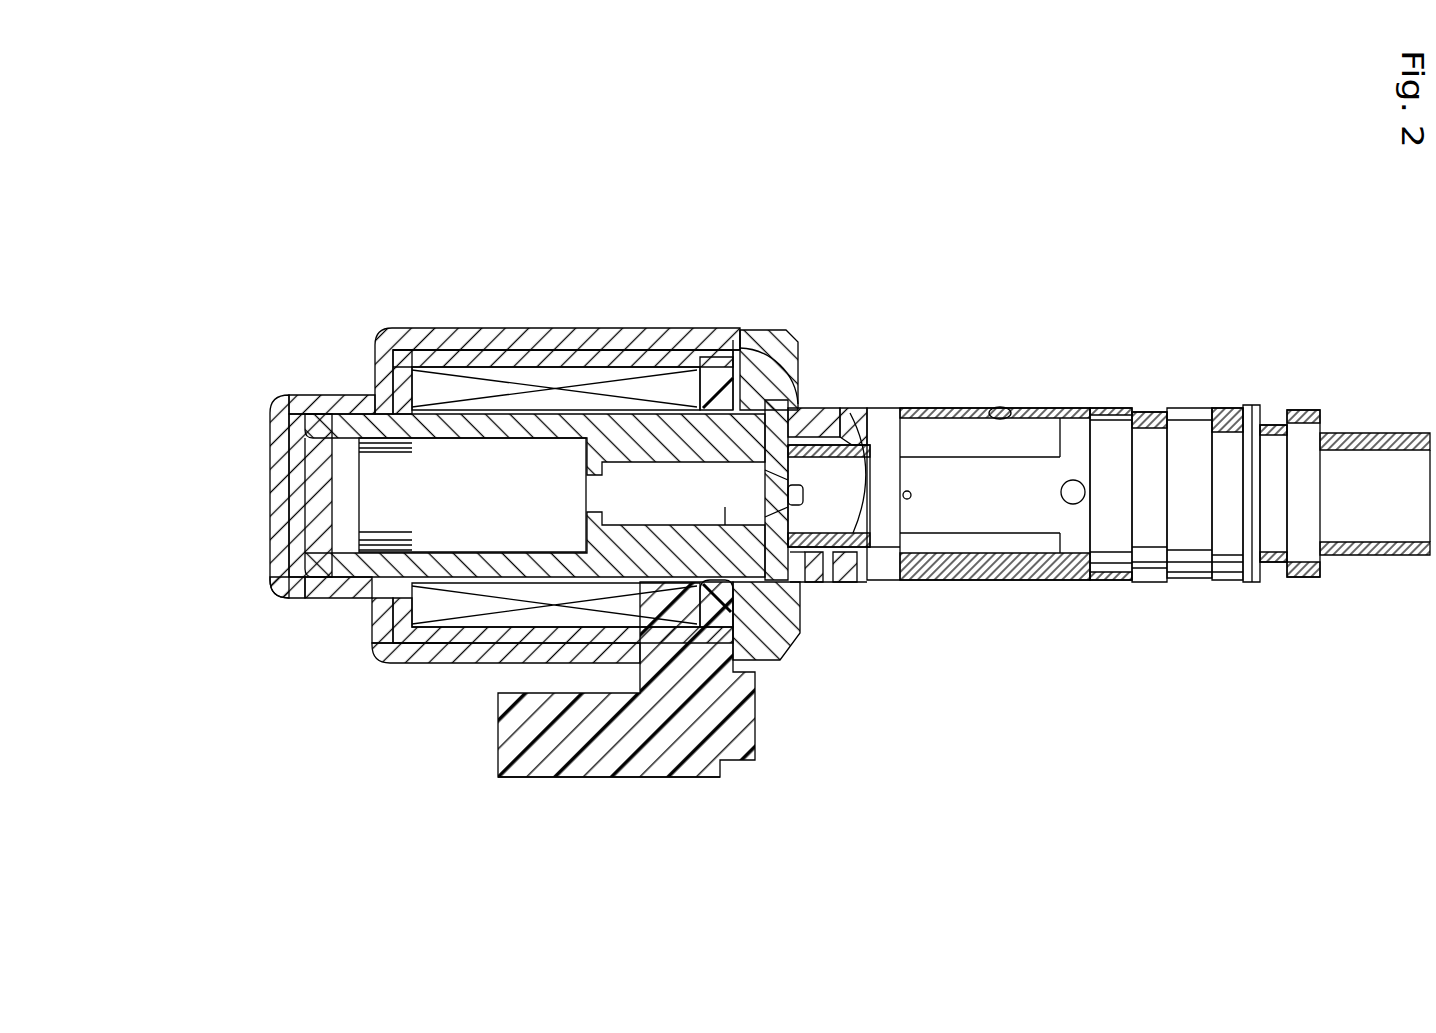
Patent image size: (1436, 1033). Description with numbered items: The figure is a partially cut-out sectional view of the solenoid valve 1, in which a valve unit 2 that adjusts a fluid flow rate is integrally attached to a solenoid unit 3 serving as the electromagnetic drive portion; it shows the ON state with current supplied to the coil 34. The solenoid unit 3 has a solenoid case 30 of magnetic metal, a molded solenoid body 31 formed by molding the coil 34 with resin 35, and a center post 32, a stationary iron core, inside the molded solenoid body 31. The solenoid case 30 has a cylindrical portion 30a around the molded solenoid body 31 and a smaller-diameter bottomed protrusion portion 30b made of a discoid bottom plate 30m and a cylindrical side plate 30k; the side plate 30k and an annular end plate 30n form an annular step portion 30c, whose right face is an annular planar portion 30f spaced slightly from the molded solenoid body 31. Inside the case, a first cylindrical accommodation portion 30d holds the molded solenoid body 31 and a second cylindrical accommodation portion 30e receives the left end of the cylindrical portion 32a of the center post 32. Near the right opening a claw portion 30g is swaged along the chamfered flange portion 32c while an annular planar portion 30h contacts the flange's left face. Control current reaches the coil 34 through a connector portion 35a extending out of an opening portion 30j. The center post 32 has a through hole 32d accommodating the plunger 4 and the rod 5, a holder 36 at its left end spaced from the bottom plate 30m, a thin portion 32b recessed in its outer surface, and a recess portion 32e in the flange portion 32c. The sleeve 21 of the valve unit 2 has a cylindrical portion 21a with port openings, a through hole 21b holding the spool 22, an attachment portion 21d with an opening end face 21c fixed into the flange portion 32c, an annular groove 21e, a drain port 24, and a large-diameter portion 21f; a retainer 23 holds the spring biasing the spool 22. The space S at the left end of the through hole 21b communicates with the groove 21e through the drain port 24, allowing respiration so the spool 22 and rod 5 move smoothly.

The solenoid valve 1 is at (1058, 262).
The valve unit 2 is at (1075, 395).
The solenoid unit 3 is at (368, 262).
The plunger 4 is at (372, 476).
The rod 5 is at (725, 507).
The sleeve 21 is at (884, 405).
The cylindrical portion 21a is at (963, 408).
The through hole 21b is at (845, 410).
The opening end face 21c is at (792, 586).
The attachment portion 21d is at (757, 440).
The annular groove 21e is at (845, 528).
The large-diameter portion 21f is at (862, 562).
The spool 22 is at (993, 581).
The retainer 23 is at (1352, 432).
The drain port 24 is at (817, 588).
The solenoid case 30 is at (400, 322).
The cylindrical portion 30a is at (433, 352).
The protrusion portion 30b is at (172, 676).
The annular step portion 30c is at (293, 784).
The first cylindrical accommodation portion 30d is at (476, 350).
The second cylindrical accommodation portion 30e is at (270, 442).
The annular planar portion 30f is at (400, 362).
The claw portion 30g is at (806, 334).
The annular planar portion 30h is at (768, 352).
The opening portion 30j is at (640, 762).
The side plate 30k is at (320, 600).
The bottom plate 30m is at (258, 600).
The end plate 30n is at (372, 640).
The molded solenoid body 31 is at (762, 726).
The center post 32 is at (810, 380).
The cylindrical portion 32a is at (300, 572).
The thin portion 32b is at (530, 568).
The flange portion 32c is at (785, 396).
The through hole 32d is at (416, 662).
The recess portion 32e is at (805, 640).
The coil 34 is at (640, 380).
The resin 35 is at (705, 395).
The connector portion 35a is at (596, 772).
The holder 36 is at (372, 540).
The space S is at (808, 600).